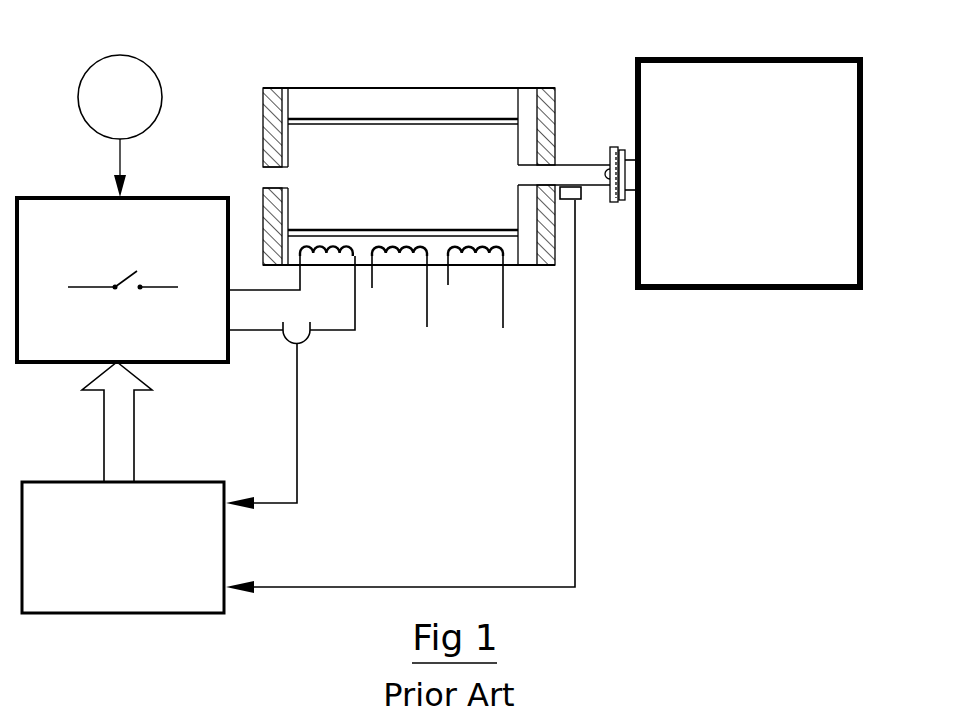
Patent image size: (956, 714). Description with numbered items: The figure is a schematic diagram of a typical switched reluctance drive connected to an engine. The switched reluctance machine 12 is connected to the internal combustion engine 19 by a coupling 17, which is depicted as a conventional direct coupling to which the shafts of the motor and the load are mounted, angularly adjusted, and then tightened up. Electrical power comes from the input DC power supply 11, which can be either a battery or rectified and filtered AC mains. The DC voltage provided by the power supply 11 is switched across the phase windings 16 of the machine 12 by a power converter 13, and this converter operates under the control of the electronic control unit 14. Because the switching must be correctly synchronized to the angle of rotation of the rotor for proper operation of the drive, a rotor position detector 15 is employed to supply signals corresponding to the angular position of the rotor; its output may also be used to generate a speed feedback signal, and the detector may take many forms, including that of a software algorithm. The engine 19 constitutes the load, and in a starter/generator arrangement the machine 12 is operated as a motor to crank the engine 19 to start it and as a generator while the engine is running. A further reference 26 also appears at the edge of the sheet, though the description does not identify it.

The input DC power supply 11 is at (158, 80).
The switched reluctance machine 12 is at (365, 86).
The power converter 13 is at (155, 197).
The electronic control unit 14 is at (152, 481).
The rotor position detector 15 is at (567, 201).
The phase windings 16 is at (317, 243).
The coupling 17 is at (616, 203).
The internal combustion engine 19 is at (765, 57).
The reference 26 is at (267, 713).